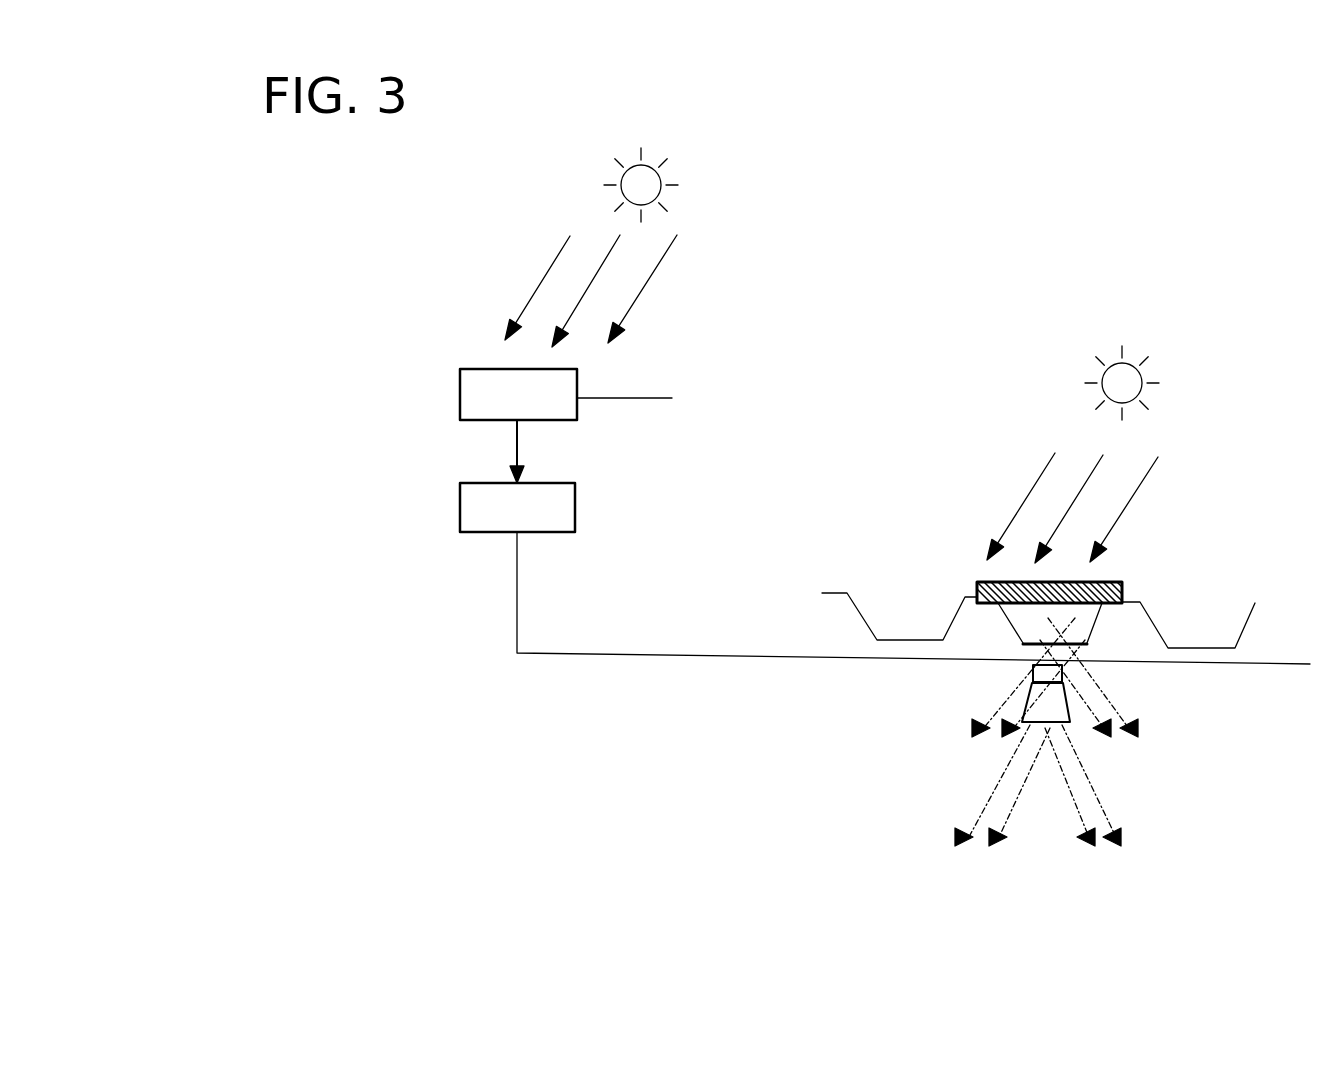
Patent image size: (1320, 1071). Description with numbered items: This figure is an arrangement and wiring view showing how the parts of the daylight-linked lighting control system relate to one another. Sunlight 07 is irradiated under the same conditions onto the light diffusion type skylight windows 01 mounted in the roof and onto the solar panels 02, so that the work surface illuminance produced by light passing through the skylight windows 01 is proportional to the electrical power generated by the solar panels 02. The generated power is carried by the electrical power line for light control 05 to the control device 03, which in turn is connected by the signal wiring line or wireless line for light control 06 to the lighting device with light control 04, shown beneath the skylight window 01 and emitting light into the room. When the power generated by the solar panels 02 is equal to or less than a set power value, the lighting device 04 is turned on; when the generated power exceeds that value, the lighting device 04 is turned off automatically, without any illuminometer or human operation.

The light diffusion type skylight window 01 is at (1120, 580).
The solar panel 02 is at (563, 368).
The control device 03 is at (567, 482).
The lighting device with light control 04 is at (1070, 697).
The electrical power line for light control 05 is at (513, 448).
The signal wiring line or wireless line for light control 06 is at (590, 655).
The sunlight 07 is at (540, 293).